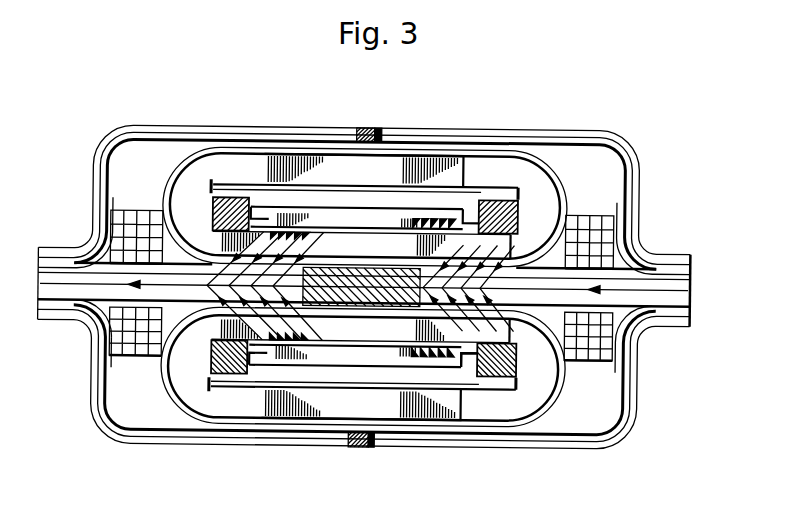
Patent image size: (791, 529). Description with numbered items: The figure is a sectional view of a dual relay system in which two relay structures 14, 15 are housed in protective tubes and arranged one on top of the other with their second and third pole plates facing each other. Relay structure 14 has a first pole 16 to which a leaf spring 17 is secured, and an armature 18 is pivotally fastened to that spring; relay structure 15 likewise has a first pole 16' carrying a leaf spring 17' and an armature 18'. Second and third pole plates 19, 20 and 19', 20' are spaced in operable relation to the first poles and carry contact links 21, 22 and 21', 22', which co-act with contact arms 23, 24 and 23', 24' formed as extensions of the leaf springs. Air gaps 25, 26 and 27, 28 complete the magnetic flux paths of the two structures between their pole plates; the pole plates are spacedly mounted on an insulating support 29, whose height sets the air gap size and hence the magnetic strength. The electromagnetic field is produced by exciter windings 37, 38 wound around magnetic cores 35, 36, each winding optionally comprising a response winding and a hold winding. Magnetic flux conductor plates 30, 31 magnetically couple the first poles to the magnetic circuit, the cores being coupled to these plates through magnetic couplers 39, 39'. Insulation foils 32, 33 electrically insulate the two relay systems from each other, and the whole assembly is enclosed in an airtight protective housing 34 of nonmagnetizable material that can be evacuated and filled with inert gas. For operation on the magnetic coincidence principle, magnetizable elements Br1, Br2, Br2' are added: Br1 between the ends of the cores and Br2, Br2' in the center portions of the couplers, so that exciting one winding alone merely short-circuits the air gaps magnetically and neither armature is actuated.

The relay structure 14 is at (521, 202).
The relay structure 15 is at (531, 401).
The first pole 16 is at (364, 136).
The first pole 16' is at (361, 438).
The leaf spring 17 is at (363, 160).
The leaf spring 17' is at (360, 413).
The armature 18 is at (433, 136).
The armature 18' is at (391, 439).
The second pole plate 19 is at (366, 139).
The second pole plate 19' is at (221, 402).
The third pole plate 20 is at (385, 173).
The third pole plate 20' is at (478, 420).
The contact link 21 is at (232, 158).
The contact link 21' is at (227, 412).
The contact link 22 is at (502, 161).
The contact link 22' is at (475, 416).
The contact arm 23 is at (290, 135).
The contact arm 23' is at (363, 434).
The contact arm 24 is at (451, 158).
The contact arm 24' is at (437, 426).
The air gap 25 is at (305, 230).
The air gap 26 is at (380, 175).
The air gap 27 is at (366, 407).
The air gap 28 is at (317, 382).
The support 29 is at (229, 190).
The magnetic flux conductor plate 30 is at (361, 150).
The magnetic flux conductor plate 31 is at (424, 415).
The insulation foil 32 is at (208, 254).
The insulation foil 33 is at (181, 372).
The protective housing 34 is at (562, 195).
The magnetic core 35 is at (97, 301).
The magnetic core 36 is at (631, 310).
The exciter winding 37 is at (120, 231).
The exciter winding 38 is at (607, 230).
The magnetic coupler 39 is at (365, 205).
The magnetic coupler 39' is at (363, 348).
The magnetizable element Br1 is at (350, 300).
The magnetizable element Br2 is at (392, 105).
The magnetizable element Br2' is at (387, 473).